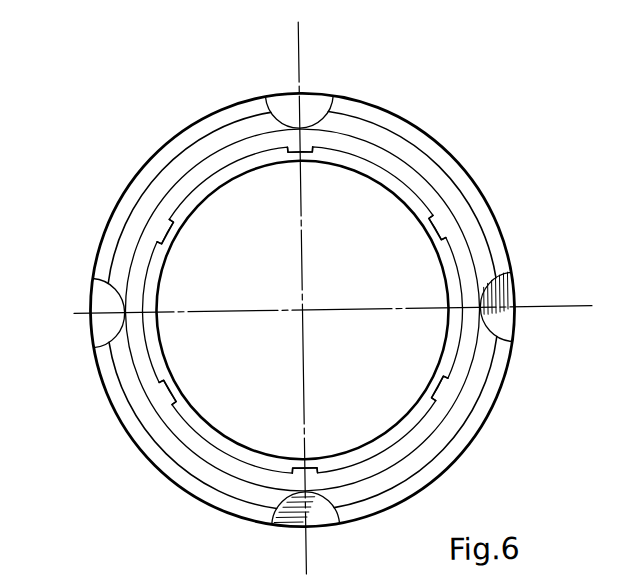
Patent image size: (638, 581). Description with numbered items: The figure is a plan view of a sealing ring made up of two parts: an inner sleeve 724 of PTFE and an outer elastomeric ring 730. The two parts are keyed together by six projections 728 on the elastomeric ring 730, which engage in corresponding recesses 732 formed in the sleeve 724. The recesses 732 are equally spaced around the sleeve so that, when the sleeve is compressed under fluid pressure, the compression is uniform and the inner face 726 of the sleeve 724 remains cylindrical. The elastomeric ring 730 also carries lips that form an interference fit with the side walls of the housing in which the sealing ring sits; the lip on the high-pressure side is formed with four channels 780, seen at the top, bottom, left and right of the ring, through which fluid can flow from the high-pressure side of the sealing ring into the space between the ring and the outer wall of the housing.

The sleeve 724 is at (223, 444).
The inner face 726 is at (192, 207).
The projections 728 is at (432, 378).
The elastomeric ring 730 is at (205, 150).
The recesses 732 is at (313, 145).
The channels 780 is at (285, 108).